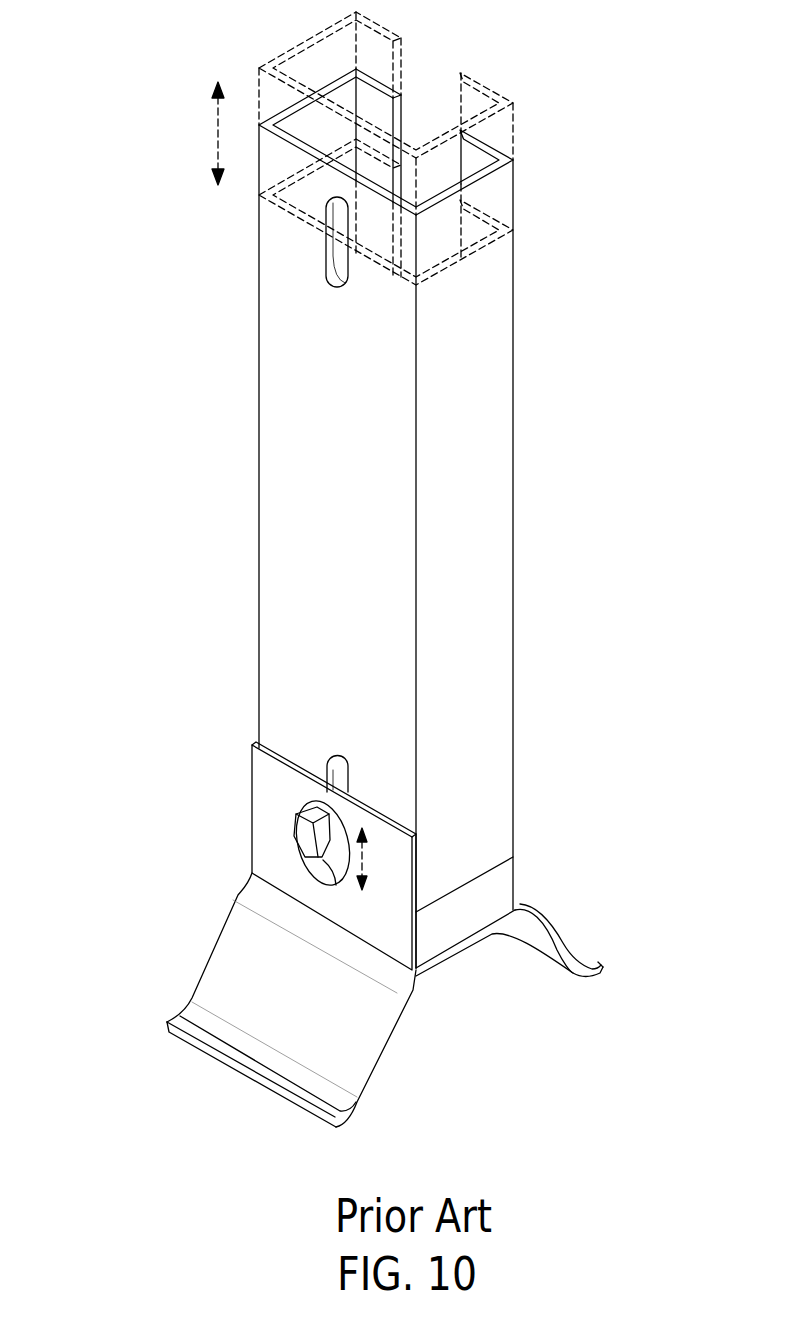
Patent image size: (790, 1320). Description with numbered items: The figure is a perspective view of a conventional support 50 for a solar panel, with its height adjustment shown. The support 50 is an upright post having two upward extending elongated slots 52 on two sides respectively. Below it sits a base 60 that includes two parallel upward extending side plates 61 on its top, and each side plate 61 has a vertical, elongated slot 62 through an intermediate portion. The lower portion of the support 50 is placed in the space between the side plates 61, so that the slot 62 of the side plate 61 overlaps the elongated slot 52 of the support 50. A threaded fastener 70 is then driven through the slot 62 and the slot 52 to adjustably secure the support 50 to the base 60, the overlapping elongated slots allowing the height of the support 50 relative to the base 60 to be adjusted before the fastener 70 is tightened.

The support 50 is at (532, 440).
The elongated slot 52 is at (327, 762).
The base 60 is at (485, 1003).
The side plate 61 is at (355, 910).
The elongated slot 62 is at (325, 862).
The threaded fastener 70 is at (315, 840).